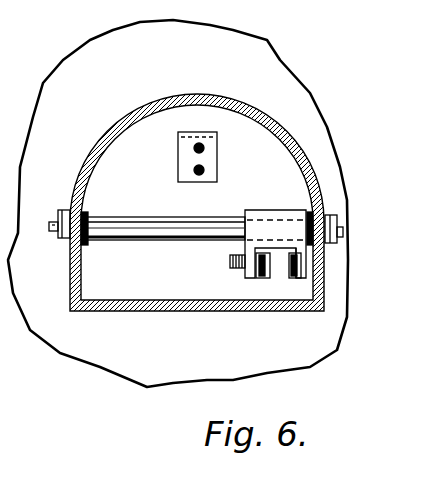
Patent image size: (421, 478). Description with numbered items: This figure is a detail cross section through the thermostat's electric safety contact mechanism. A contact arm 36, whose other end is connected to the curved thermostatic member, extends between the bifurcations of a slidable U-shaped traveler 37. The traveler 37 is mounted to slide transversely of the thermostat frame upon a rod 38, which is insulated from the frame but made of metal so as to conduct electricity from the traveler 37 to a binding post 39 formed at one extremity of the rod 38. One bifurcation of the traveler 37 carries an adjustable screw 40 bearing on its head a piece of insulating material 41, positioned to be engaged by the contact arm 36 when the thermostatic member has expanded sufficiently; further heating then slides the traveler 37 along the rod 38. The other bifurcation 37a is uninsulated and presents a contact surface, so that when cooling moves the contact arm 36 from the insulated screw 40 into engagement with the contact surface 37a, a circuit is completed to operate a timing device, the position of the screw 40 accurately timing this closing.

The contact arm 36 is at (297, 279).
The slidable U-shaped traveler 37 is at (263, 209).
The bifurcation of the traveler 37a is at (302, 263).
The rod 38 is at (137, 231).
The binding post 39 is at (57, 240).
The adjustable screw 40 is at (231, 266).
The piece of insulating material 41 is at (262, 273).